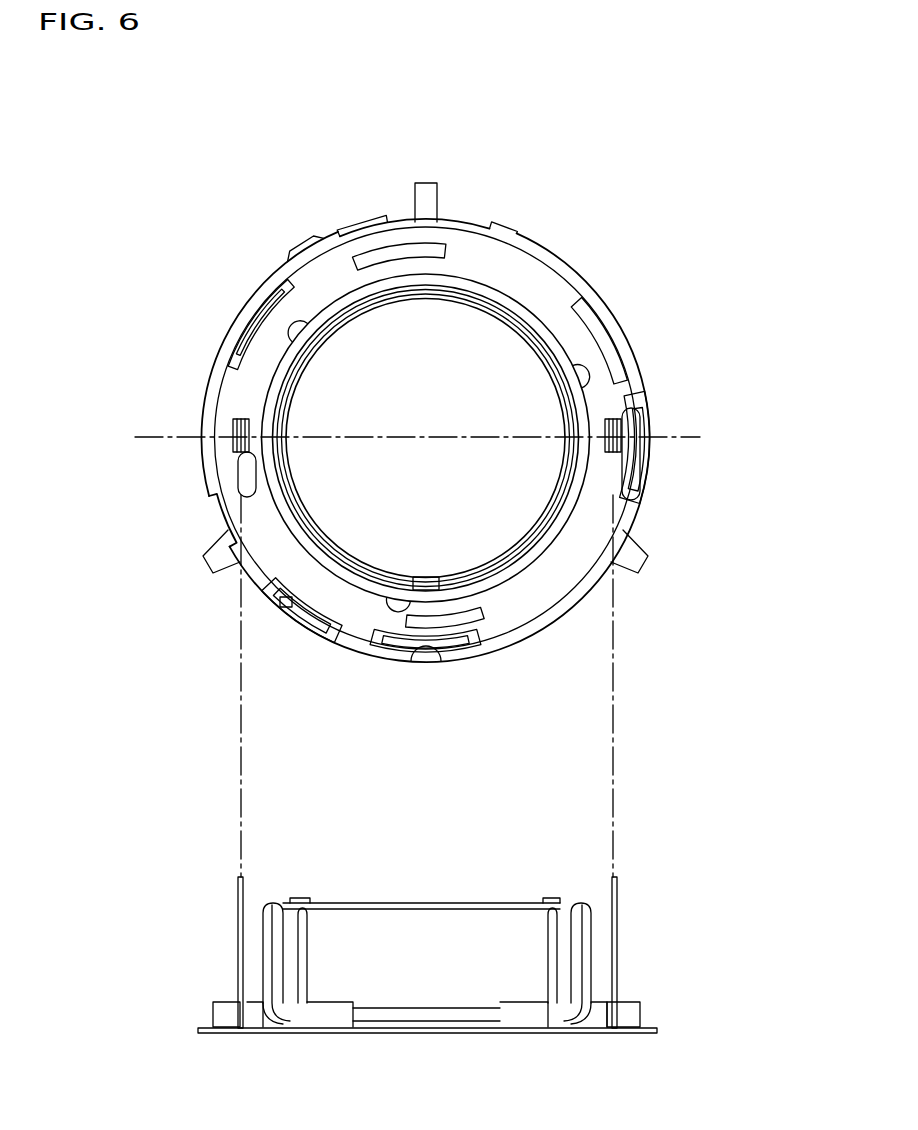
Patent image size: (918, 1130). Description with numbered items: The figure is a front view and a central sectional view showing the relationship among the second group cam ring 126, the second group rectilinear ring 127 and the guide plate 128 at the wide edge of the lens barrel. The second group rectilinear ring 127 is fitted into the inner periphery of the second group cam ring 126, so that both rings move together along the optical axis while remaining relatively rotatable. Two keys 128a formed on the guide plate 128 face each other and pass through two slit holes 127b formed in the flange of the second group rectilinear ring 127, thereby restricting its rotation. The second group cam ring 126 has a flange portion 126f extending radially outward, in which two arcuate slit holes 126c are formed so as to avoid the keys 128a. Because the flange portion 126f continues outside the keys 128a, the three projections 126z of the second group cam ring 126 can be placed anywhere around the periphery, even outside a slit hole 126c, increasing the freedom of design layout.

The second group cam ring 126 is at (210, 1003).
The arcuate slit hole 126c is at (587, 395).
The flange portion 126f is at (398, 238).
The projection 126z is at (278, 277).
The second group rectilinear ring 127 is at (213, 1017).
The slit hole 127b is at (622, 410).
The guide plate 128 is at (200, 1030).
The key 128a is at (612, 430).